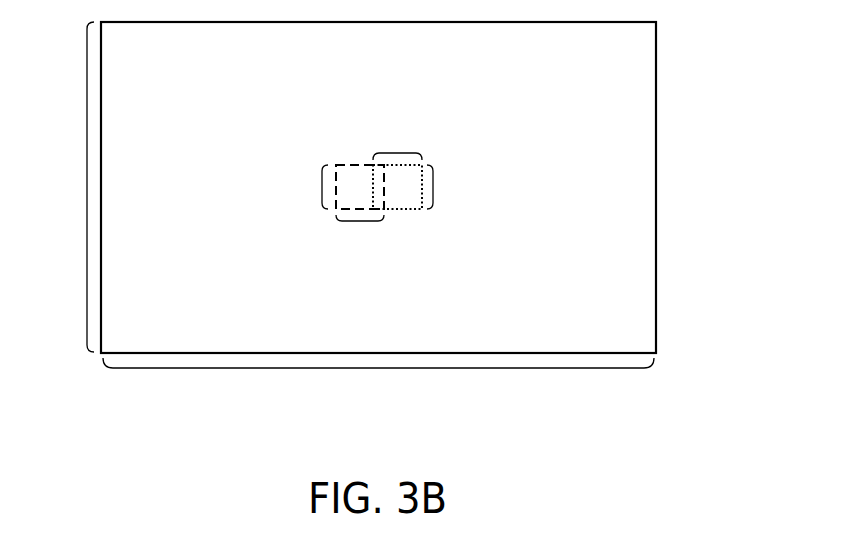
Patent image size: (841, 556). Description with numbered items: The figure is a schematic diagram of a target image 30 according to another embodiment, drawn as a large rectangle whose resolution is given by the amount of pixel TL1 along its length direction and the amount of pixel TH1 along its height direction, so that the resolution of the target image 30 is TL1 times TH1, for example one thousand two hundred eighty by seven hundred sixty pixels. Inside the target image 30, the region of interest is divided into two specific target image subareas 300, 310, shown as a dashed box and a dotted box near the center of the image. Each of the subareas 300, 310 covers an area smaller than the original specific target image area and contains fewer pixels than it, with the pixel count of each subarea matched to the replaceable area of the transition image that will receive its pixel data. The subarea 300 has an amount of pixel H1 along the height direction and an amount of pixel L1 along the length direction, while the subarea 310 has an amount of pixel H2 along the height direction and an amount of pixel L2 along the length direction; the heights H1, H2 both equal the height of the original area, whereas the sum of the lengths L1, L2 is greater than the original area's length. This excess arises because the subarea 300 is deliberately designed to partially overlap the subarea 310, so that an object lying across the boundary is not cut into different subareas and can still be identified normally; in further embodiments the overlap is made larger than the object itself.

The target image 30 is at (657, 190).
The specific target image subarea 300 is at (352, 166).
The specific target image subarea 310 is at (407, 208).
The amount of pixel along the height direction of the specific target image subarea H1 is at (322, 187).
The amount of pixel along the height direction of the specific target image subarea H2 is at (433, 187).
The amount of pixel along the length direction of the specific target image subarea L1 is at (360, 221).
The amount of pixel along the length direction of the specific target image subarea L2 is at (397, 153).
The amount of pixel along a height direction of the target image TH1 is at (87, 187).
The amount of pixel along a length direction of the target image TL1 is at (378, 368).